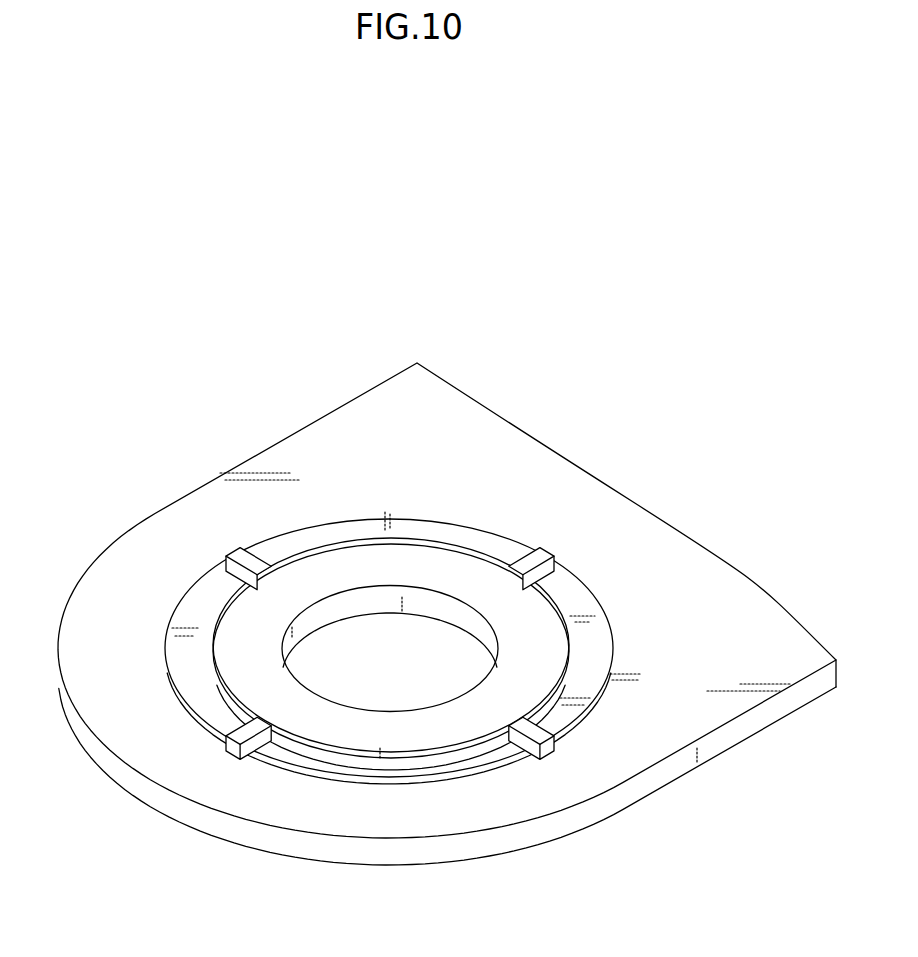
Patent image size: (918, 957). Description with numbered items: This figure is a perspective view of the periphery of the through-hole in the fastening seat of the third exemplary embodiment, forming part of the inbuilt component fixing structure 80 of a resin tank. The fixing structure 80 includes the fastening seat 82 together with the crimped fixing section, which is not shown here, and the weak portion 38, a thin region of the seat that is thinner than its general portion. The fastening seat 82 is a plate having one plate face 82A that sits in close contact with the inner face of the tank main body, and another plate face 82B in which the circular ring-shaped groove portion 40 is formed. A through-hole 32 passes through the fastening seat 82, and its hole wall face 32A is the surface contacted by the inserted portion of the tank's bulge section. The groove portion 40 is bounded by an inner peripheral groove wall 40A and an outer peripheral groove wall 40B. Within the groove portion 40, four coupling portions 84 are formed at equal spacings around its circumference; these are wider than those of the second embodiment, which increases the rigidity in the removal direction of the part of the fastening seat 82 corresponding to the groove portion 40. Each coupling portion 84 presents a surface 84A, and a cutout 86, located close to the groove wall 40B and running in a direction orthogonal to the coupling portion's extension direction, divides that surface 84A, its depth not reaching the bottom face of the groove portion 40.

The fixing structure 80 is at (447, 599).
The fastening seat 82 is at (301, 424).
The plate face 82A is at (728, 749).
The plate face 82B is at (177, 540).
The weak portion 38 is at (567, 606).
The groove portion 40 is at (586, 653).
The groove wall 40A is at (470, 749).
The groove wall 40B is at (462, 534).
The coupling portion 84 is at (504, 556).
The surface 84A is at (522, 554).
The cutout 86 is at (528, 556).
The through-hole 32 is at (403, 501).
The hole wall face 32A is at (342, 606).